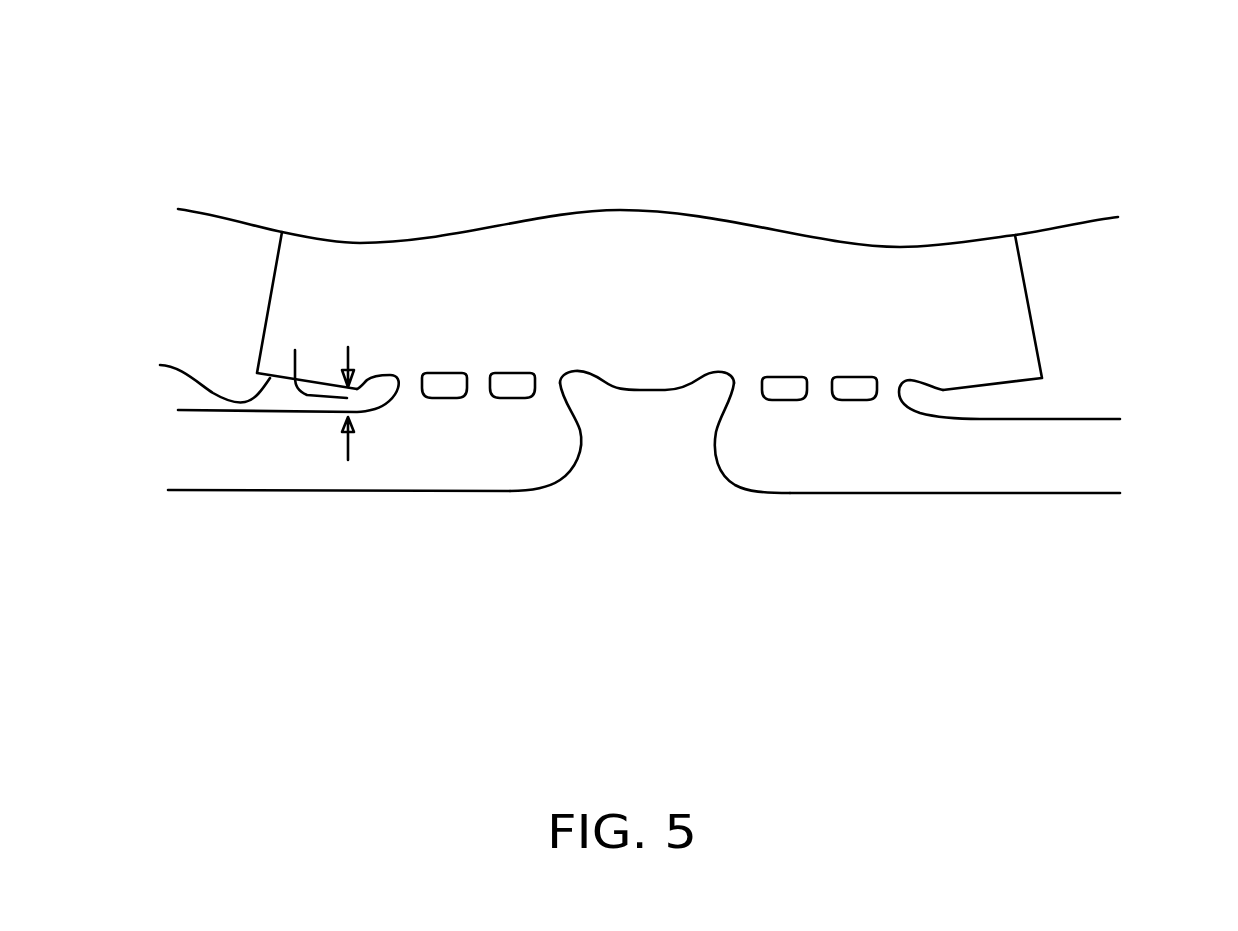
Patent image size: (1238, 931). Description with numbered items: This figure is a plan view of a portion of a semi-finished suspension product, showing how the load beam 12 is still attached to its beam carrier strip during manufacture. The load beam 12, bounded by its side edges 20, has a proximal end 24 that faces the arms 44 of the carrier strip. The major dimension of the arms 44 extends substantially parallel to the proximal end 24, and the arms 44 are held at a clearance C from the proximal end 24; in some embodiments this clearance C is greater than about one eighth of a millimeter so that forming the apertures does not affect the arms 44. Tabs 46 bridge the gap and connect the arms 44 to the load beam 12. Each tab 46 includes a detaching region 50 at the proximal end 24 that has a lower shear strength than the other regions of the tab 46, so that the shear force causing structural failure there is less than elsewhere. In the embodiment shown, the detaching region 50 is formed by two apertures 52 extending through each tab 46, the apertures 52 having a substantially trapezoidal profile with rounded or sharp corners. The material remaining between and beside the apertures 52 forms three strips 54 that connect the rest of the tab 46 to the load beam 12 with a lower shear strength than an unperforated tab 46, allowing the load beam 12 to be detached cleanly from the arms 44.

The load beam 12 is at (597, 237).
The side edges 20 is at (268, 302).
The proximal end 24 is at (160, 365).
The arms 44 is at (253, 470).
The tabs 46 is at (710, 417).
The detaching region 50 is at (478, 350).
The apertures 52 is at (445, 393).
The strips 54 is at (410, 383).
The clearance C is at (320, 392).